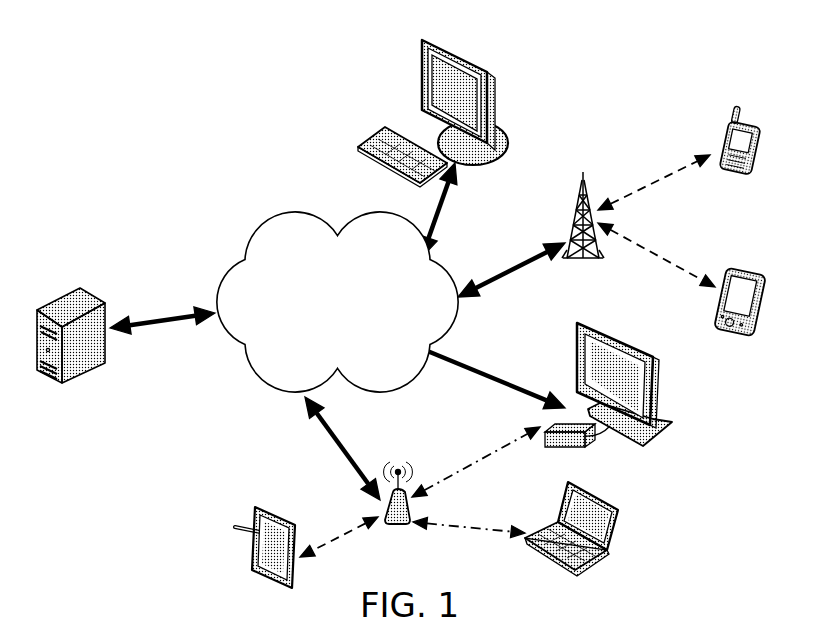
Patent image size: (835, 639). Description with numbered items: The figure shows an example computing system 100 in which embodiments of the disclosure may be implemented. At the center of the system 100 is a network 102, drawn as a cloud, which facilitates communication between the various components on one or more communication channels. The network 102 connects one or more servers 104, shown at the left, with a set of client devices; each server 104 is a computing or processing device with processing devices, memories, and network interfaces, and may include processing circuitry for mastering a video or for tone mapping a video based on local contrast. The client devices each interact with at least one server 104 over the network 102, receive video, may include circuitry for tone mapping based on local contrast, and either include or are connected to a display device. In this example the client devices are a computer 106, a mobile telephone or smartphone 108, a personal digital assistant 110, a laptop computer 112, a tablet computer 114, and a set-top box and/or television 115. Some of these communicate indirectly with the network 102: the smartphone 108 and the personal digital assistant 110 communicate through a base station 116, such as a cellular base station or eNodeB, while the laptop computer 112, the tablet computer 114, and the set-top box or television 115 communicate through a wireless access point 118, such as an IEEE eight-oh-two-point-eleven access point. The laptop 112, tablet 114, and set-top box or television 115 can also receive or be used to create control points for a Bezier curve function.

The computing system 100 is at (179, 83).
The network 102 is at (257, 217).
The server 104 is at (50, 302).
The computer 106 is at (493, 75).
The mobile telephone or smartphone 108 is at (757, 125).
The personal digital assistant (PDA) 110 is at (753, 277).
The laptop computer 112 is at (598, 560).
The tablet computer 114 is at (255, 508).
The set-top box and/or television 115 is at (652, 443).
The base station 116 is at (602, 253).
The wireless access point 118 is at (405, 490).